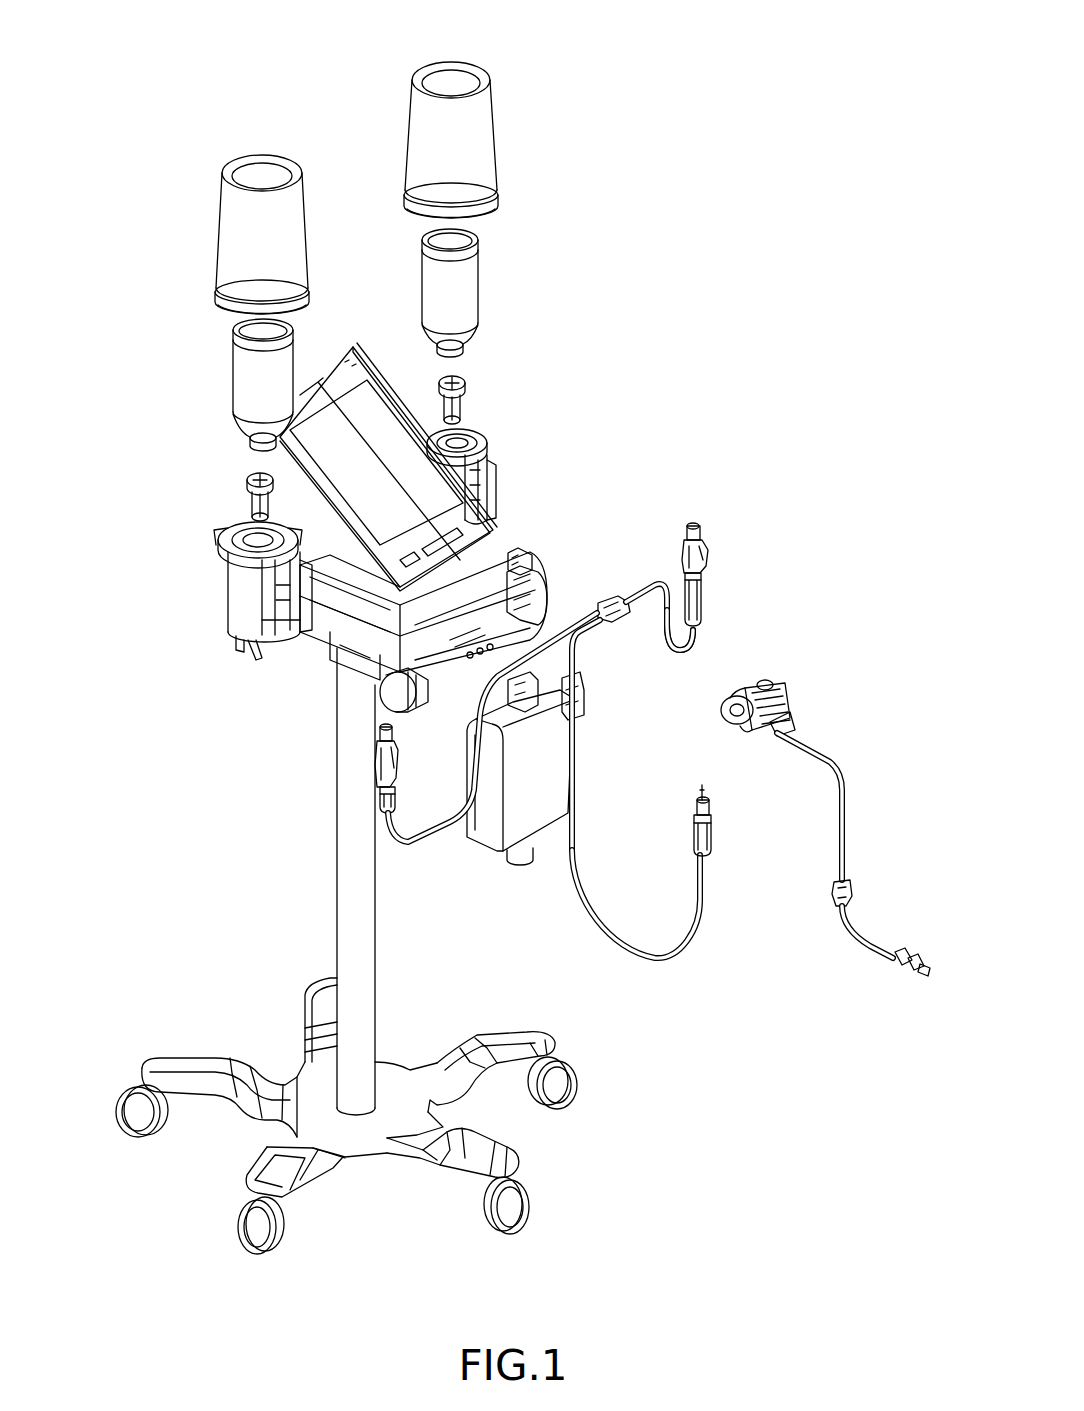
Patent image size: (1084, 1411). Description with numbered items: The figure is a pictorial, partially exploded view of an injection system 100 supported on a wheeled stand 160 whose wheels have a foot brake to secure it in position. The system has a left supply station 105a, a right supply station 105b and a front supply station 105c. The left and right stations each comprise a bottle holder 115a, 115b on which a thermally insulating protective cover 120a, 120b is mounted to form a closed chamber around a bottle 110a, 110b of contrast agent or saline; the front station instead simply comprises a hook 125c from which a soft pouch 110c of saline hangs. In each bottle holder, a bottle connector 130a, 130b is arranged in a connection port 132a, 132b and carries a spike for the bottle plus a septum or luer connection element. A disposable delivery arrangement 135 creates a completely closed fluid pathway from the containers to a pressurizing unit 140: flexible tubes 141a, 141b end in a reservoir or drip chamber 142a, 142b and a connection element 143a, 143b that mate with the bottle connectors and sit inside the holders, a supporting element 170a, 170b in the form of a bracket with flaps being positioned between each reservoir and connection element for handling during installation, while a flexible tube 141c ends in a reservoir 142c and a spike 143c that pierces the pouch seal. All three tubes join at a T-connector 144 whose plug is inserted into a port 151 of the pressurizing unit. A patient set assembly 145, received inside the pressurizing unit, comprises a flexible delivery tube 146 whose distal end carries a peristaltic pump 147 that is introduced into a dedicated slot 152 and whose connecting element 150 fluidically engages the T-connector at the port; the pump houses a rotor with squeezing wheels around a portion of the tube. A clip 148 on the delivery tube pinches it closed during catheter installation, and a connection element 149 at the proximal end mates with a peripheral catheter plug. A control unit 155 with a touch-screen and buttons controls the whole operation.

The injection system 100 is at (852, 35).
The supply station 105a is at (188, 266).
The supply station 105b is at (524, 182).
The supply station 105c is at (479, 833).
The bottle 110a is at (187, 381).
The bottle 110b is at (518, 293).
The pouch 110c is at (479, 796).
The bottle holder 115a is at (196, 596).
The bottle holder 115b is at (539, 481).
The protective cover 120a is at (195, 234).
The protective cover 120b is at (524, 140).
The hook 125c is at (605, 719).
The bottle connector 130a is at (183, 475).
The bottle connector 130b is at (526, 370).
The connection port 132a is at (199, 525).
The connection port 132b is at (509, 428).
The delivery arrangement 135 is at (645, 717).
The pressurizing unit 140 is at (463, 593).
The flexible tube 141a is at (425, 758).
The flexible tube 141b is at (740, 637).
The flexible tube 141c is at (611, 933).
The reservoir 142a is at (309, 814).
The reservoir 142b is at (757, 600).
The reservoir 142c is at (646, 852).
The connection element 143a is at (308, 752).
The connection element 143b is at (758, 546).
The spike 143c is at (645, 810).
The T-connector 144 is at (670, 557).
The patient set assembly 145 is at (794, 895).
The delivery tube 146 is at (781, 806).
The peristaltic pump 147 is at (832, 738).
The clip 148 is at (786, 875).
The connection element 149 is at (866, 968).
The connecting element 150 is at (808, 722).
The port 151 is at (567, 548).
The slot 152 is at (559, 591).
The control unit 155 is at (388, 446).
The stand 160 is at (346, 951).
The supporting element 170a is at (280, 774).
The supporting element 170b is at (784, 568).